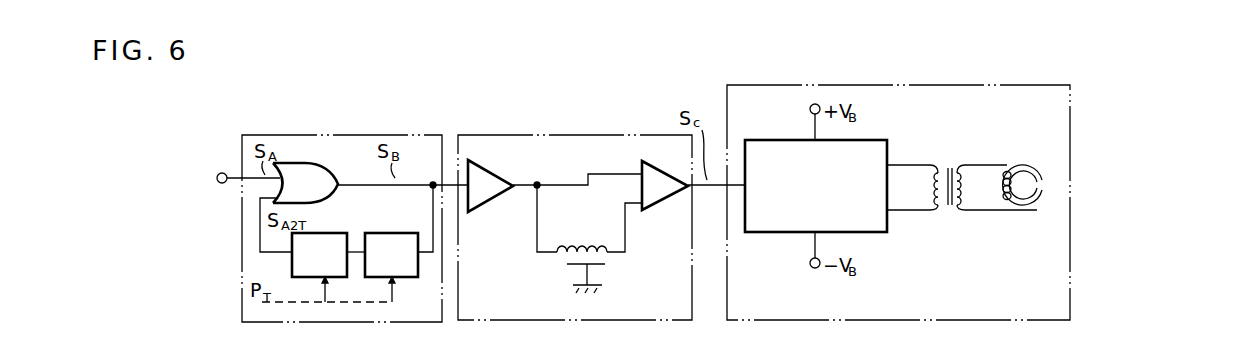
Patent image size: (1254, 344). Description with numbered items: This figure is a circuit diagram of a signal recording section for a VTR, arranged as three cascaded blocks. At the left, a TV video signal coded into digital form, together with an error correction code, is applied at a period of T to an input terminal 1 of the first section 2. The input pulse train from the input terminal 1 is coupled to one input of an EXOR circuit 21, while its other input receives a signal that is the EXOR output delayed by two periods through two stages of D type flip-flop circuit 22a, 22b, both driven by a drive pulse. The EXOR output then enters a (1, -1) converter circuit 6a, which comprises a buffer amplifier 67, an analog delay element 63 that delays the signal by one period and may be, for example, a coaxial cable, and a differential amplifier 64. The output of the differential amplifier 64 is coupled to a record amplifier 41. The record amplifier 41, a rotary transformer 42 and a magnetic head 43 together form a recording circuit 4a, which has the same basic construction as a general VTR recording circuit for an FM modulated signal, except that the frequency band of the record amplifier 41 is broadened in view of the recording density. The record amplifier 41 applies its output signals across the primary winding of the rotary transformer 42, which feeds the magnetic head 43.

The input terminal 1 is at (217, 184).
The signal recording section 2 is at (347, 133).
The EXOR circuit 21 is at (325, 156).
The D type flip-flop circuit 22a is at (398, 226).
The D type flip-flop circuit 22b is at (343, 226).
The (1, -1) converter circuit 6a is at (545, 133).
The buffer amplifier 67 is at (493, 200).
The differential amplifier 64 is at (662, 203).
The analog delay element 63 is at (607, 260).
The recording circuit 4a is at (892, 83).
The record amplifier 41 is at (765, 233).
The rotary transformer 42 is at (950, 212).
The magnetic head 43 is at (1022, 206).